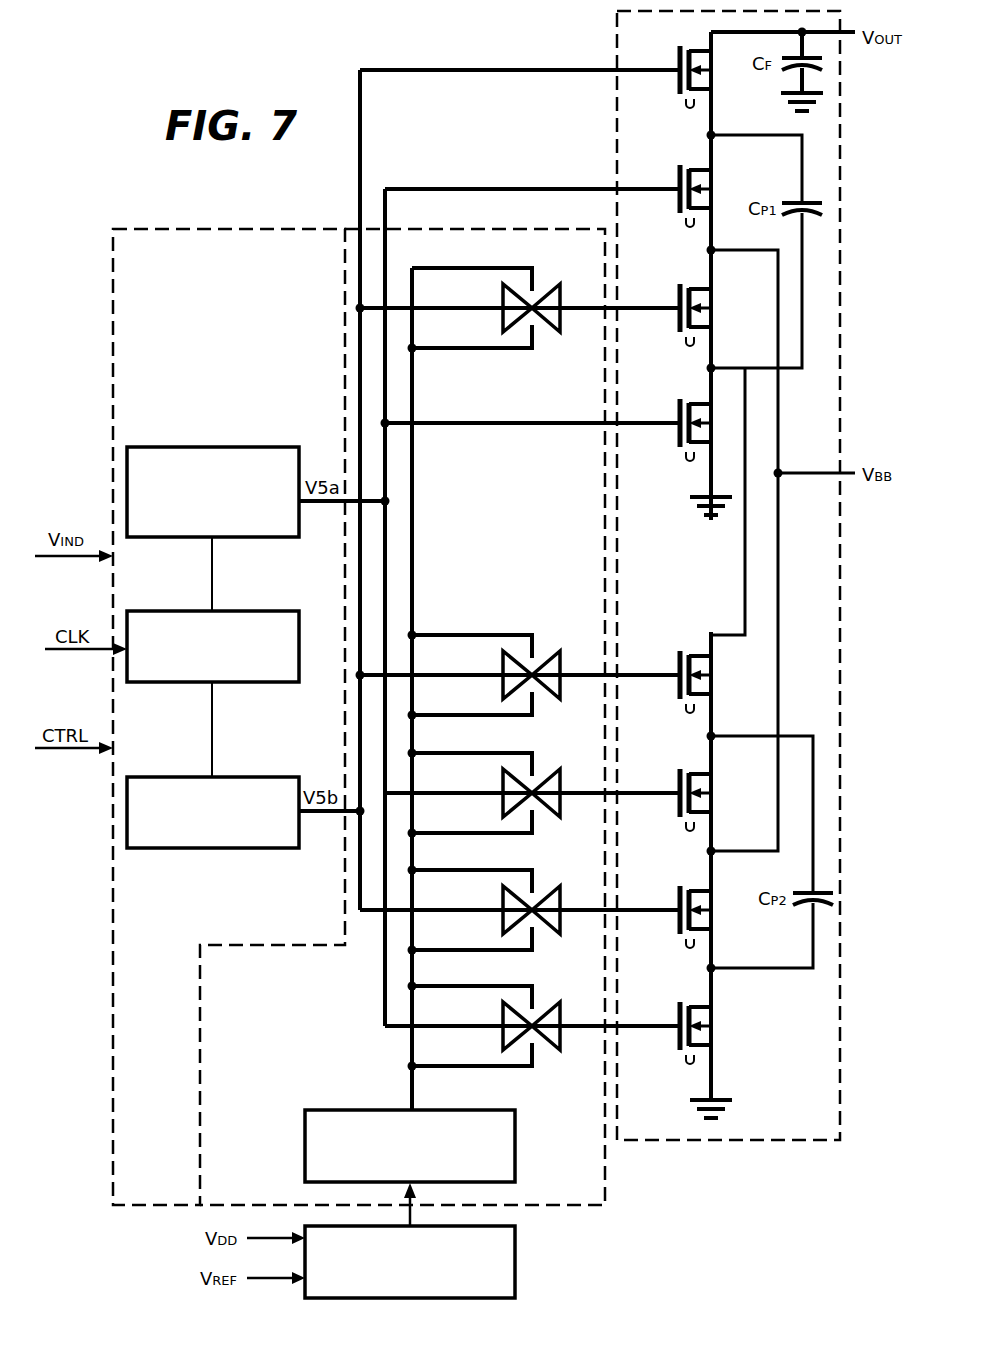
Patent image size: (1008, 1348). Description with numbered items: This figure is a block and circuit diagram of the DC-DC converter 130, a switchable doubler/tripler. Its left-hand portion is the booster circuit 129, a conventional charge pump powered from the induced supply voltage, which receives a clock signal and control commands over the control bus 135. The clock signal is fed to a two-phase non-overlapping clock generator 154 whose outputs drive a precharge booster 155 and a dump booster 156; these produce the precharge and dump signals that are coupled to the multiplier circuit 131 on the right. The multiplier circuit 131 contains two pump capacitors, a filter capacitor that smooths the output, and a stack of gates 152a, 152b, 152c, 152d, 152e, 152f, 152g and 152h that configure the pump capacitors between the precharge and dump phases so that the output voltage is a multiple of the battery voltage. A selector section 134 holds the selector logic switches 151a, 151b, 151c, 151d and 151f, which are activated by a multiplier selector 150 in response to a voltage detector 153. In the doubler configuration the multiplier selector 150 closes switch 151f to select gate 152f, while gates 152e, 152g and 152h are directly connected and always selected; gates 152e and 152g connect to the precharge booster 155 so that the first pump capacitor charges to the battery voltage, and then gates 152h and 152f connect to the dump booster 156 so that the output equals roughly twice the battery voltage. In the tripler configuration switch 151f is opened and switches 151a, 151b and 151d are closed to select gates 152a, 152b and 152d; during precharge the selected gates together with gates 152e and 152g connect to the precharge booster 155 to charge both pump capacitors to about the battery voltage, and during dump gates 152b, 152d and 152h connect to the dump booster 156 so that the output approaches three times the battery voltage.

The VDD1 booster circuit 129 is at (128, 293).
The VDD1 DC-DC converter 130 is at (825, 1246).
The VDD1 multiplier circuit 131 is at (605, 148).
The switching circuit 134 is at (452, 232).
The control bus 135 is at (76, 752).
The multiplier selector 150 is at (332, 1110).
The selector logic switch 151a is at (536, 1010).
The selector logic switch 151b is at (536, 894).
The selector logic switch 151c is at (536, 777).
The selector logic switch 151d is at (536, 659).
The selector logic switch 151f is at (536, 292).
The gate 152a is at (677, 1047).
The gate 152b is at (677, 931).
The gate 152c is at (677, 814).
The gate 152d is at (677, 696).
The gate 152e is at (677, 444).
The gate 152f is at (677, 329).
The gate 152g is at (677, 210).
The gate 152h is at (677, 91).
The voltage detector 153 is at (515, 1268).
The two-phase non-overlapping clock generator 154 is at (227, 683).
The precharge booster 155 is at (222, 538).
The dump booster 156 is at (218, 849).